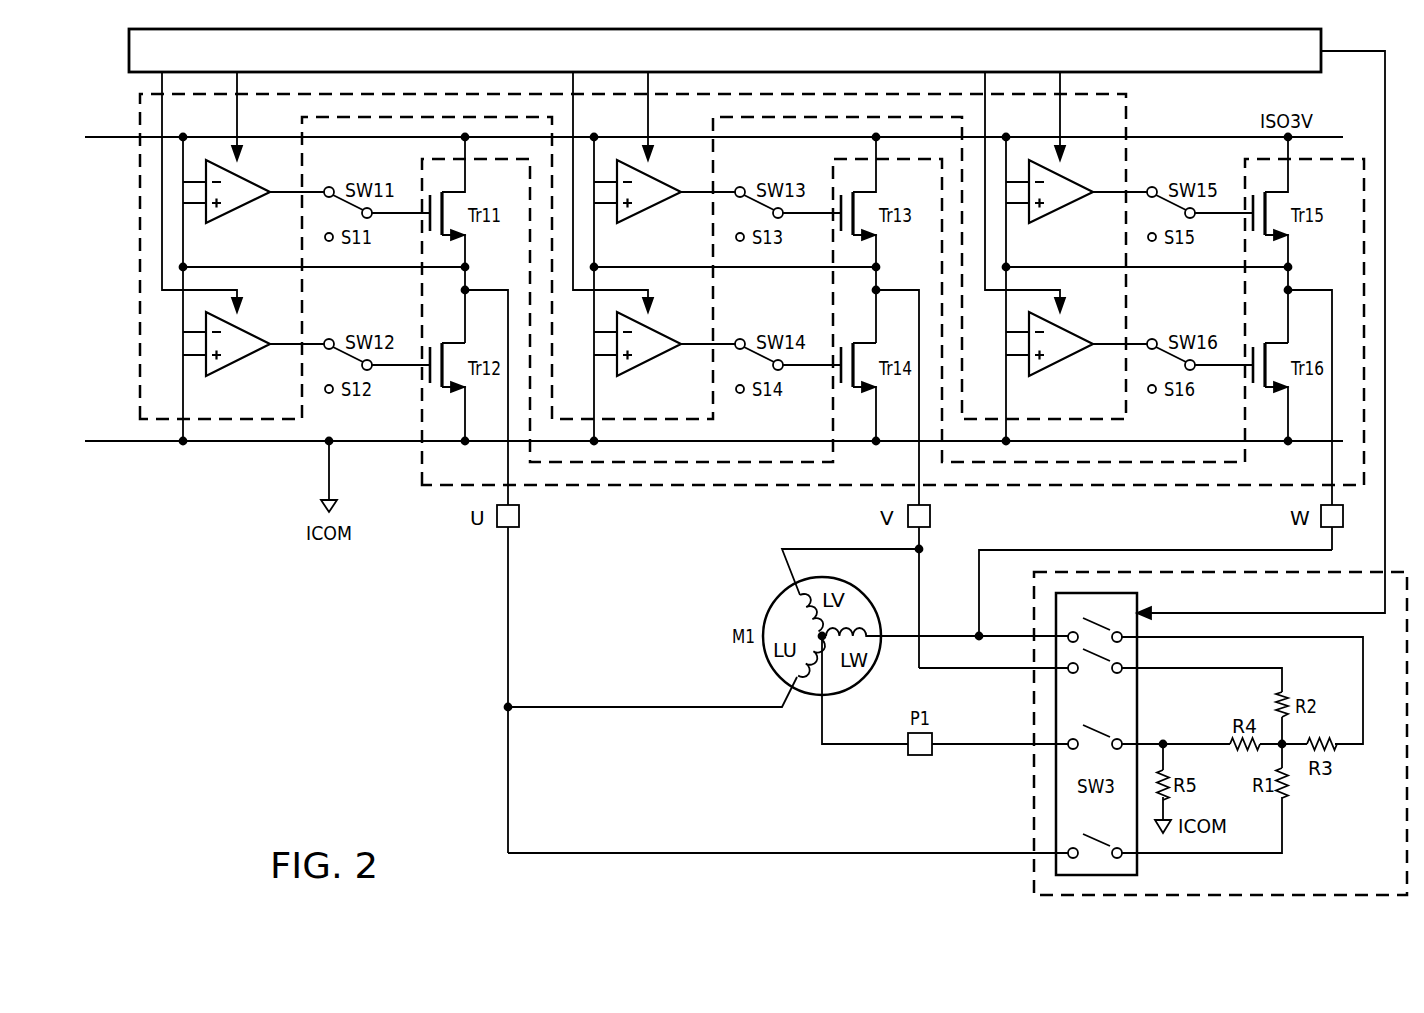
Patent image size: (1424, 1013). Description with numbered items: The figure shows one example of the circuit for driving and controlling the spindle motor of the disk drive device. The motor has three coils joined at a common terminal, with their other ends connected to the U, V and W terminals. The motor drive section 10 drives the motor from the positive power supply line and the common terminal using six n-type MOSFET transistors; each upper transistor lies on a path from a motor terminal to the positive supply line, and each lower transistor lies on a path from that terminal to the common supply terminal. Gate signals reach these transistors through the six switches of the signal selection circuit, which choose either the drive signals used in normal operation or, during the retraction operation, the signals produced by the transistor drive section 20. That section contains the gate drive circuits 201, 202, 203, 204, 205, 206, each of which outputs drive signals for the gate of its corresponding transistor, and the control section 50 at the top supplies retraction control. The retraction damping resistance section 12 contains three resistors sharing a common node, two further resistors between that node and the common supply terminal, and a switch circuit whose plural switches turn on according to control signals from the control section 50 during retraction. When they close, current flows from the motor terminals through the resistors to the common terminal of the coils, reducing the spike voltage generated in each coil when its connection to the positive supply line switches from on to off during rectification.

The control section 50 is at (129, 52).
The transistor drive section 20 is at (140, 206).
The motor drive section 10 is at (610, 487).
The retraction damping resistance section 12 is at (1033, 788).
The gate drive circuit 201 is at (238, 208).
The gate drive circuit 202 is at (238, 360).
The gate drive circuit 203 is at (649, 208).
The gate drive circuit 204 is at (649, 360).
The gate drive circuit 205 is at (1061, 208).
The gate drive circuit 206 is at (1061, 360).